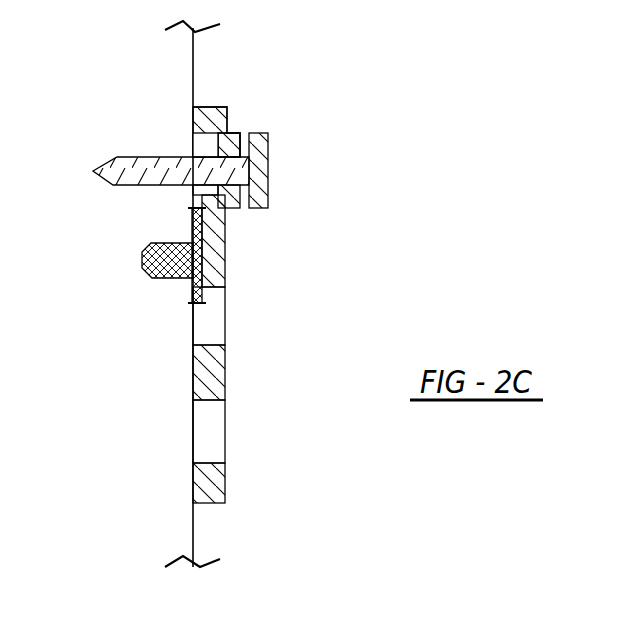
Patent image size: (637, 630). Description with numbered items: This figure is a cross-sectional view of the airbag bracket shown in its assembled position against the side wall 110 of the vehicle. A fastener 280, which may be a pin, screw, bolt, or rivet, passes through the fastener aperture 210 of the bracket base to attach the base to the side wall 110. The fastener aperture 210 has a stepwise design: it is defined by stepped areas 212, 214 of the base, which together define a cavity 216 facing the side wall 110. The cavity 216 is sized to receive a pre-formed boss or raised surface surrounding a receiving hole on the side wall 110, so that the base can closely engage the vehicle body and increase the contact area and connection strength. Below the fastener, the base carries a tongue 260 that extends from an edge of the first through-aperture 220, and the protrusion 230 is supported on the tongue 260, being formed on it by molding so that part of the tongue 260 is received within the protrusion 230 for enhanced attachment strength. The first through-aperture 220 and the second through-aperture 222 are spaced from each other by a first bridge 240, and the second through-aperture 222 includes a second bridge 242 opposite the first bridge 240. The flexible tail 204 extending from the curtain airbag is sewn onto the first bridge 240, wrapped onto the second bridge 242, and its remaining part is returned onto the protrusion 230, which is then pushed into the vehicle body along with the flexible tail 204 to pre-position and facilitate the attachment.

The side wall 110 is at (194, 531).
The flexible tail 204 is at (187, 290).
The fastener aperture 210 is at (243, 187).
The stepped area 212 is at (239, 130).
The stepped area 214 is at (216, 104).
The cavity 216 is at (212, 144).
The first through-aperture 220 is at (234, 325).
The second through-aperture 222 is at (233, 435).
The protrusion 230 is at (167, 268).
The first bridge 240 is at (234, 378).
The second bridge 242 is at (233, 491).
The tongue 260 is at (226, 252).
The fastener 280 is at (137, 190).